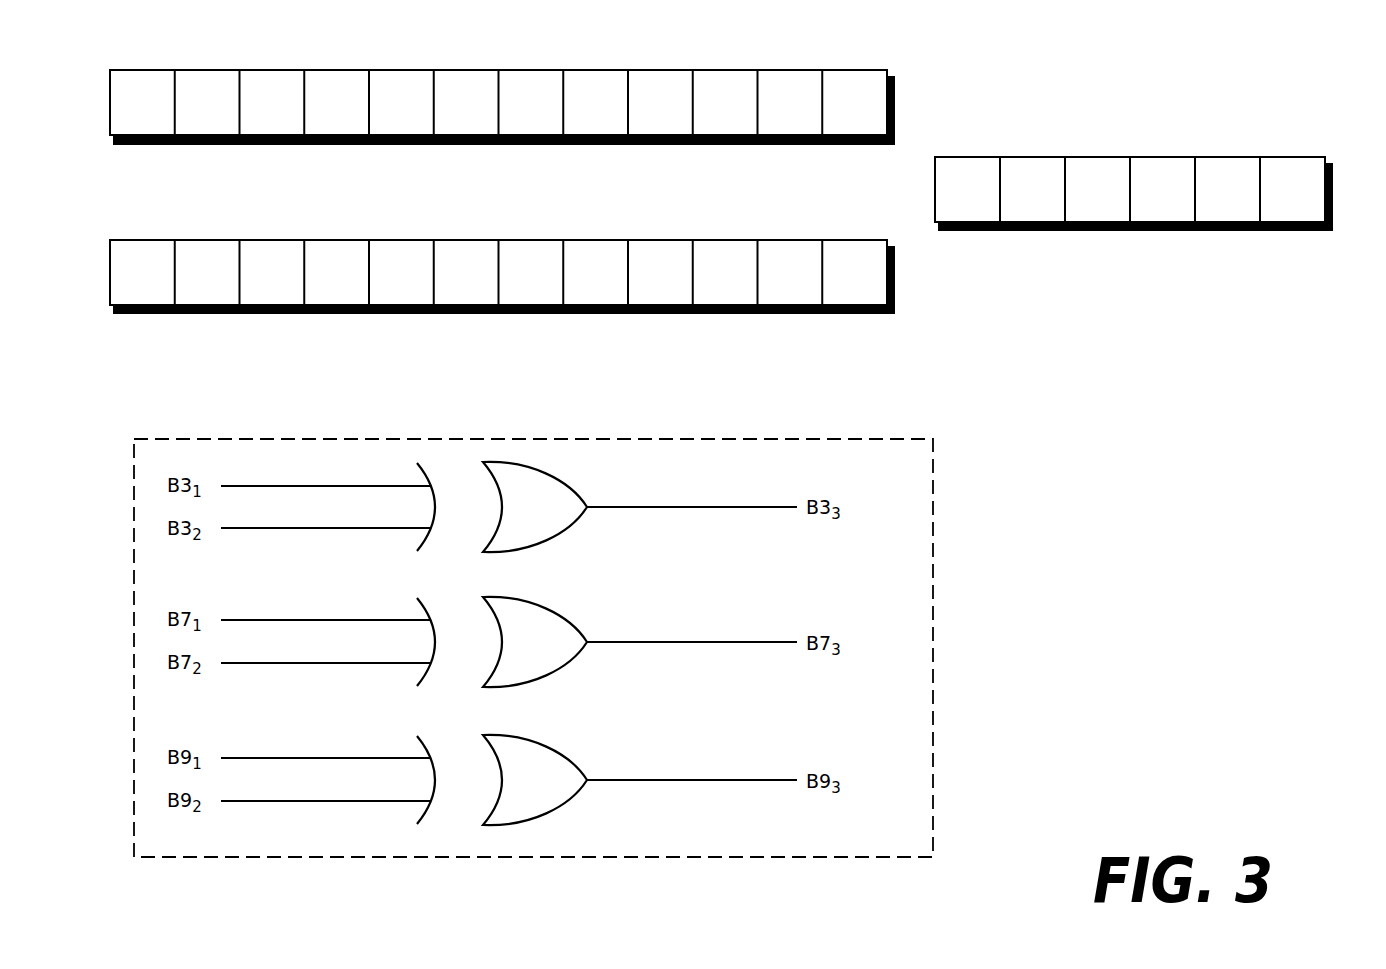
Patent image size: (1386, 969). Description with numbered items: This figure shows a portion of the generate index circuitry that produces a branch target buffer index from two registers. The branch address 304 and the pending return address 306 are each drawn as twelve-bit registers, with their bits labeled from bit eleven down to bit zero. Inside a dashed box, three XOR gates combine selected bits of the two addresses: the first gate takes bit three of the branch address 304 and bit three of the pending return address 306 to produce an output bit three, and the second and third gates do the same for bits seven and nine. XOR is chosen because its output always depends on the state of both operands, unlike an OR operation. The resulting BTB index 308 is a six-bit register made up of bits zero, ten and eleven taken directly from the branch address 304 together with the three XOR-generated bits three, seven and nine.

The branch address 304 is at (845, 70).
The pending return address 306 is at (893, 300).
The BTB index 308 is at (1275, 155).